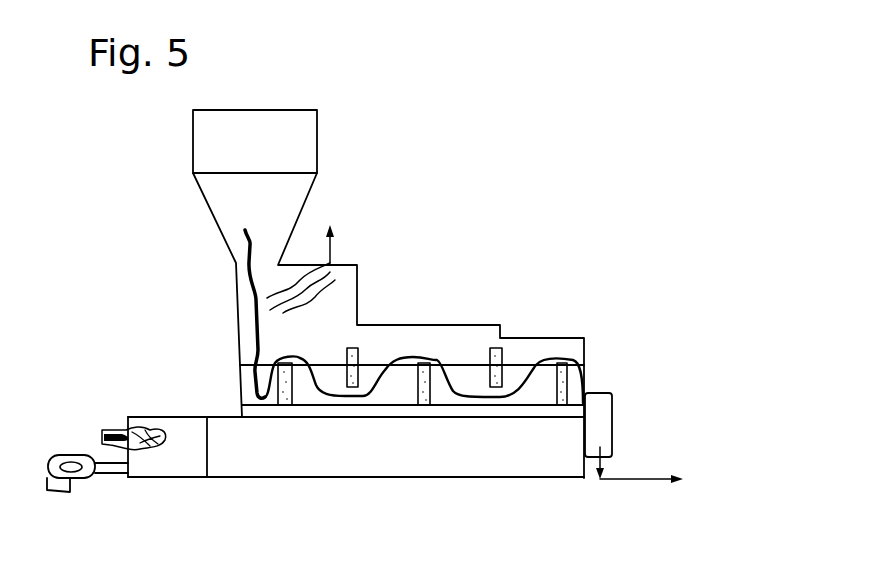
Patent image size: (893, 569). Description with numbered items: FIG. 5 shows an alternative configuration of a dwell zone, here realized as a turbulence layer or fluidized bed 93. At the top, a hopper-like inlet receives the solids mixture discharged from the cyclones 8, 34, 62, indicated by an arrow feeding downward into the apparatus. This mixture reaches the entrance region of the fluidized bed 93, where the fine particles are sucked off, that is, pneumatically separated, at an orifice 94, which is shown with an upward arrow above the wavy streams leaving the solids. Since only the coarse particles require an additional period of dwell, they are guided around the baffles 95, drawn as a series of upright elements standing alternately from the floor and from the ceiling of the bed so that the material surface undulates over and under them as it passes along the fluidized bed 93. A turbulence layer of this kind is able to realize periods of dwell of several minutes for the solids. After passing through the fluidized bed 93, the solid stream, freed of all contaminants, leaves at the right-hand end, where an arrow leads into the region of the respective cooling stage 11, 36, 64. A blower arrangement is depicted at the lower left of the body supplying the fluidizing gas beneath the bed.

The cyclone 8 is at (388, 248).
The cyclone 34 is at (388, 248).
The cyclone 62 is at (258, 101).
The fluidized bed 93 is at (397, 393).
The orifice 94 is at (330, 265).
The baffles 95 is at (360, 346).
The cooling stage 11 is at (697, 469).
The cooling stage 36 is at (697, 469).
The cooling stage 64 is at (697, 469).